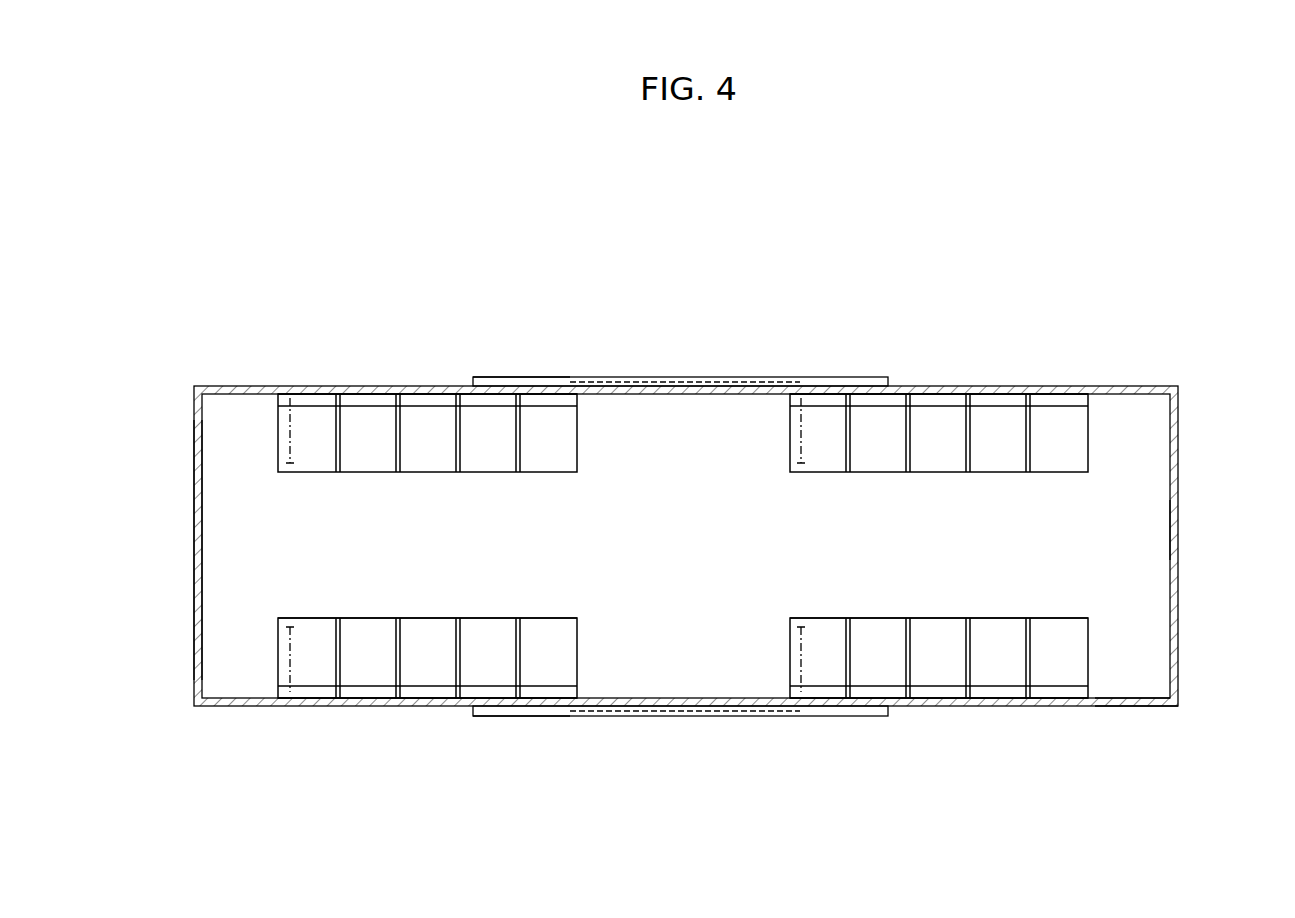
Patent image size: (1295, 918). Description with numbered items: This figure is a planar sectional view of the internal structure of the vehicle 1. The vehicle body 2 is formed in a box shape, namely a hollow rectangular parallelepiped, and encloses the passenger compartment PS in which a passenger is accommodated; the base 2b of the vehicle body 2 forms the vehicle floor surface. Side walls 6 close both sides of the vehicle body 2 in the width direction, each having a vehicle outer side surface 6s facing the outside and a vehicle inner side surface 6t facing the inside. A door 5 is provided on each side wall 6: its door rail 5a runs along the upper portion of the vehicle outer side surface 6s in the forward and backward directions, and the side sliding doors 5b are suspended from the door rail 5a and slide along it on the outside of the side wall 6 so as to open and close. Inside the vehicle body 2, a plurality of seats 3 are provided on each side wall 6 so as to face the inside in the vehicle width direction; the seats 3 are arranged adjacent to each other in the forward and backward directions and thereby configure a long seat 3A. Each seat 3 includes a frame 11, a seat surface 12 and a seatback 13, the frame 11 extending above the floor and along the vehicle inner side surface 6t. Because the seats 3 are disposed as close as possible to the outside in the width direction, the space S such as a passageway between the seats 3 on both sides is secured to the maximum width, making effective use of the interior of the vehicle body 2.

The vehicle 1 is at (1041, 322).
The vehicle body 2 is at (1130, 386).
The base 2b is at (1150, 517).
The seat 3 is at (367, 477).
The long seat 3A is at (285, 475).
The door 5 is at (800, 376).
The door rail 5a is at (853, 377).
The side sliding door 5b is at (708, 374).
The side wall 6 is at (240, 386).
The vehicle inner side surface 6t is at (1103, 697).
The vehicle outer side surface 6s is at (1122, 708).
The frame 11 is at (333, 672).
The seat surface 12 is at (435, 463).
The seatback 13 is at (486, 403).
The space S is at (720, 556).
The passenger compartment PS is at (731, 440).